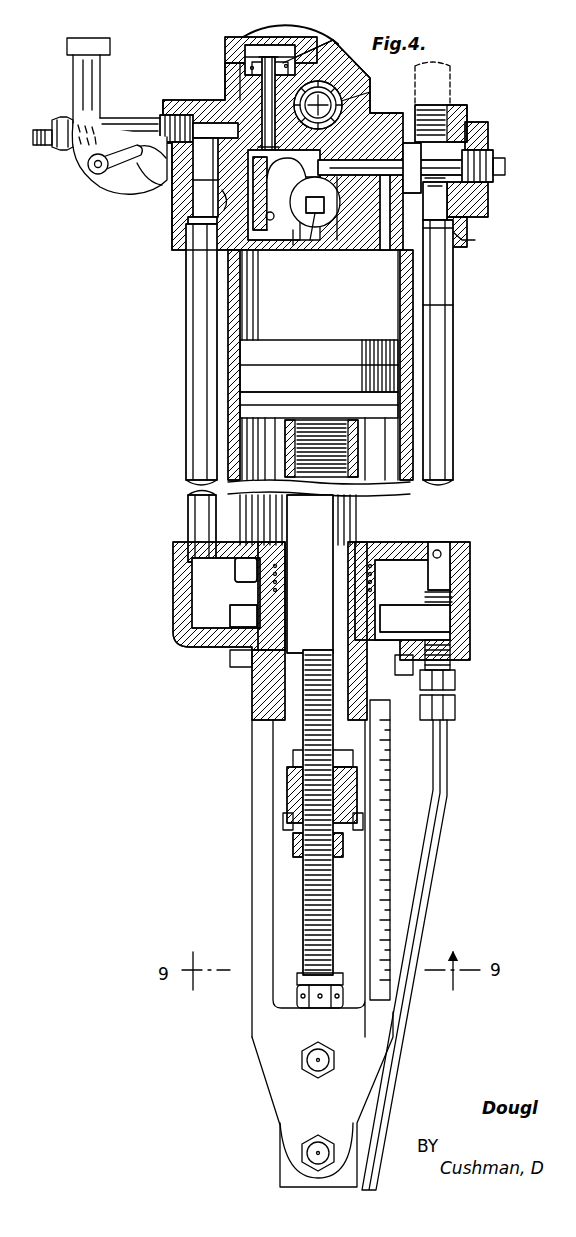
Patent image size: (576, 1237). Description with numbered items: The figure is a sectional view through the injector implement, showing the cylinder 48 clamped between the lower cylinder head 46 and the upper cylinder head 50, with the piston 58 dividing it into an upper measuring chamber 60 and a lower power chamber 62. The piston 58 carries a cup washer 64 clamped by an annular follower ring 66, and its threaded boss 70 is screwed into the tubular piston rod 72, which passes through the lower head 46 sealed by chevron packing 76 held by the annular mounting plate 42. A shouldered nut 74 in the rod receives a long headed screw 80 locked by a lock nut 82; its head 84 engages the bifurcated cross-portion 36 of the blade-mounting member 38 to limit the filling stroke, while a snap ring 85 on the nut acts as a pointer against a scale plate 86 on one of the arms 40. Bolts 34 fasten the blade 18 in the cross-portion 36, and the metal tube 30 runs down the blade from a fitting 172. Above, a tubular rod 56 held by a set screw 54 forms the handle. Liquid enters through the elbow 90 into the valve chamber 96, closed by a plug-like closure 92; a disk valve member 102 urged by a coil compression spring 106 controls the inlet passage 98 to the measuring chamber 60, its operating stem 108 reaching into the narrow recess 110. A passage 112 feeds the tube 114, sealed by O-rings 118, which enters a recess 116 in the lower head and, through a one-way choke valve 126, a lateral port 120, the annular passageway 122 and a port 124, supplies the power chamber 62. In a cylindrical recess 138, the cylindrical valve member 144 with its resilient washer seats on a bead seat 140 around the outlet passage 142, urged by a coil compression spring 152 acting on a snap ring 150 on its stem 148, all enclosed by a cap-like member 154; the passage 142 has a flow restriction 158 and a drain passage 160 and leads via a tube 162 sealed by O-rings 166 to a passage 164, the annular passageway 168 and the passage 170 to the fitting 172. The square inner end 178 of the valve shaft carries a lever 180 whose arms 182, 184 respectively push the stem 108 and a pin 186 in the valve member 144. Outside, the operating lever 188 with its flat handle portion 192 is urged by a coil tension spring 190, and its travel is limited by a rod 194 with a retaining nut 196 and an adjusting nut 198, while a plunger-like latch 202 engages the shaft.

The ground-penetrating blade 18 is at (272, 1175).
The metal tube 30 is at (430, 906).
The bolts 34 is at (310, 1138).
The bifurcated cross-portion 36 is at (272, 1042).
The blade-mounting member 38 is at (255, 888).
The spaced arms 40 is at (250, 802).
The annular mounting plate 42 is at (254, 695).
The lower cylinder head 46 is at (176, 605).
The cylinder 48 is at (430, 312).
The upper cylinder head 50 is at (462, 118).
The set screw 54 is at (340, 90).
The tubular rod 56 is at (366, 118).
The piston 58 is at (247, 412).
The upper measuring chamber 60 is at (440, 268).
The lower power chamber 62 is at (398, 455).
The cup washer 64 is at (247, 380).
The annular follower ring 66 is at (247, 355).
The exteriorly threaded boss 70 is at (344, 450).
The tubular piston rod 72 is at (382, 468).
The shouldered nut 74 is at (290, 780).
The chevron packing 76 is at (275, 652).
The long headed screw 80 is at (300, 908).
The lock nut 82 is at (300, 853).
The head of screw 84 is at (293, 1000).
The snap ring 85 is at (288, 822).
The scale plate 86 is at (392, 788).
The elbow 90 is at (458, 82).
The plug-like closure 92 is at (468, 208).
The valve chamber 96 is at (478, 185).
The inlet passage 98 is at (400, 275).
The disk valve member 102 is at (412, 141).
The coil compression spring 106 is at (489, 125).
The operating stem 108 is at (372, 148).
The narrow recess 110 is at (314, 240).
The passage 112 is at (455, 222).
The tube 114 is at (455, 352).
The recess 116 is at (470, 610).
The O-rings 118 is at (480, 244).
The lateral port 120 is at (452, 579).
The annular passageway 122 is at (245, 570).
The port 124 is at (247, 533).
The one-way choke valve 126 is at (444, 548).
The cylindrical recess 138 is at (293, 255).
The bead seat 140 is at (217, 173).
The outlet passage 142 is at (200, 190).
The cylindrical valve member 144 is at (249, 212).
The stem 148 is at (322, 62).
The snap ring 150 is at (292, 58).
The coil compression spring 152 is at (265, 39).
The cap-like member 154 is at (228, 42).
The flow restriction 158 is at (232, 102).
The drain passage 160 is at (237, 80).
The tube 162 is at (193, 448).
The passage 164 is at (200, 618).
The O-rings 166 is at (195, 252).
The annular passageway 168 is at (232, 660).
The passage 170 is at (445, 628).
The fitting 172 is at (458, 678).
The square inner end 178 is at (301, 244).
The lever 180 is at (340, 212).
The lever arm 182 is at (333, 159).
The lever arm 184 is at (292, 197).
The pin 186 is at (271, 232).
The operating lever 188 is at (130, 208).
The coil tension spring 190 is at (128, 178).
The flat handle portion 192 is at (86, 40).
The rod 194 is at (128, 120).
The retaining nut 196 is at (332, 82).
The adjusting nut 198 is at (62, 152).
The plunger-like latch 202 is at (327, 250).